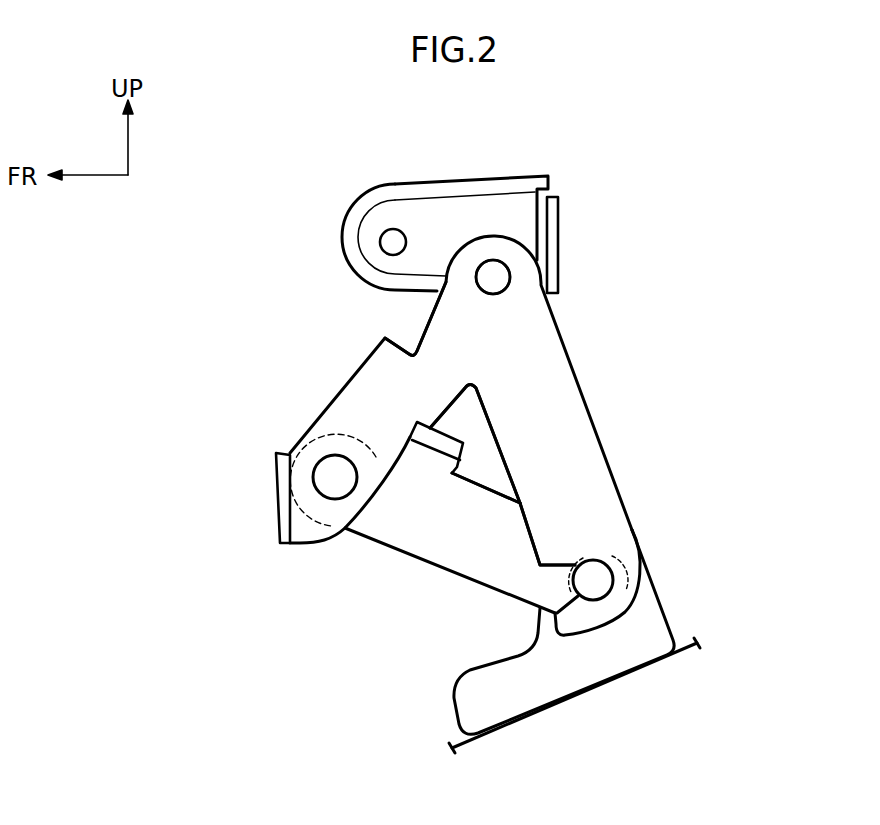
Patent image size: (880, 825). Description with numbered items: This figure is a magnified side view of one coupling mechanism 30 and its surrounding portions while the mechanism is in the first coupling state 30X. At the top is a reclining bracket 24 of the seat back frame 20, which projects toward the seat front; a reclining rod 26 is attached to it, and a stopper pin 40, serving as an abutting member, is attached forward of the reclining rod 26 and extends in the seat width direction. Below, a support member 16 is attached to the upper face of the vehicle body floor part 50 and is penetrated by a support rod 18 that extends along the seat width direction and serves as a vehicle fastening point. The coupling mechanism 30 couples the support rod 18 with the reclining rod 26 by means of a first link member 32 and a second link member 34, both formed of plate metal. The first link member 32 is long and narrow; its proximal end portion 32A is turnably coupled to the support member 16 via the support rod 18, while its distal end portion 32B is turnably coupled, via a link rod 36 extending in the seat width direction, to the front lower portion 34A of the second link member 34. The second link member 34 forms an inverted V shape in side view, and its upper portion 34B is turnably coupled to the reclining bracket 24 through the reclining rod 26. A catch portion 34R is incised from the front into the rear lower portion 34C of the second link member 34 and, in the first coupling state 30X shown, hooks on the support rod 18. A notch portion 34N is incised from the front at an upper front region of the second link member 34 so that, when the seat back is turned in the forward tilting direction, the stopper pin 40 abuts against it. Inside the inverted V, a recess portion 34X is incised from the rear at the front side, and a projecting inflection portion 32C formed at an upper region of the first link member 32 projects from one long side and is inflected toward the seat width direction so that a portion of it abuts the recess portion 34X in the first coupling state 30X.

The support member 16 is at (668, 615).
The support rod 18 is at (612, 570).
The seat back frame 20 is at (333, 228).
The reclining bracket 24 is at (518, 215).
The reclining rod 26 is at (491, 259).
The coupling mechanism 30 is at (503, 461).
The first coupling state 30X is at (503, 461).
The first link member 32 is at (399, 536).
The proximal end portion 32A is at (570, 606).
The distal end portion 32B is at (292, 522).
The projecting inflection portion 32C is at (452, 427).
The second link member 34 is at (463, 448).
The lower portion 34A is at (322, 518).
The upper portion 34B is at (521, 268).
The lower portion 34C is at (632, 592).
The notch portion 34N is at (410, 350).
The catch portion 34R is at (580, 582).
The recess portion 34X is at (413, 442).
The link rod 36 is at (330, 458).
The stopper pin 40 is at (392, 229).
The vehicle body floor part 50 is at (693, 640).